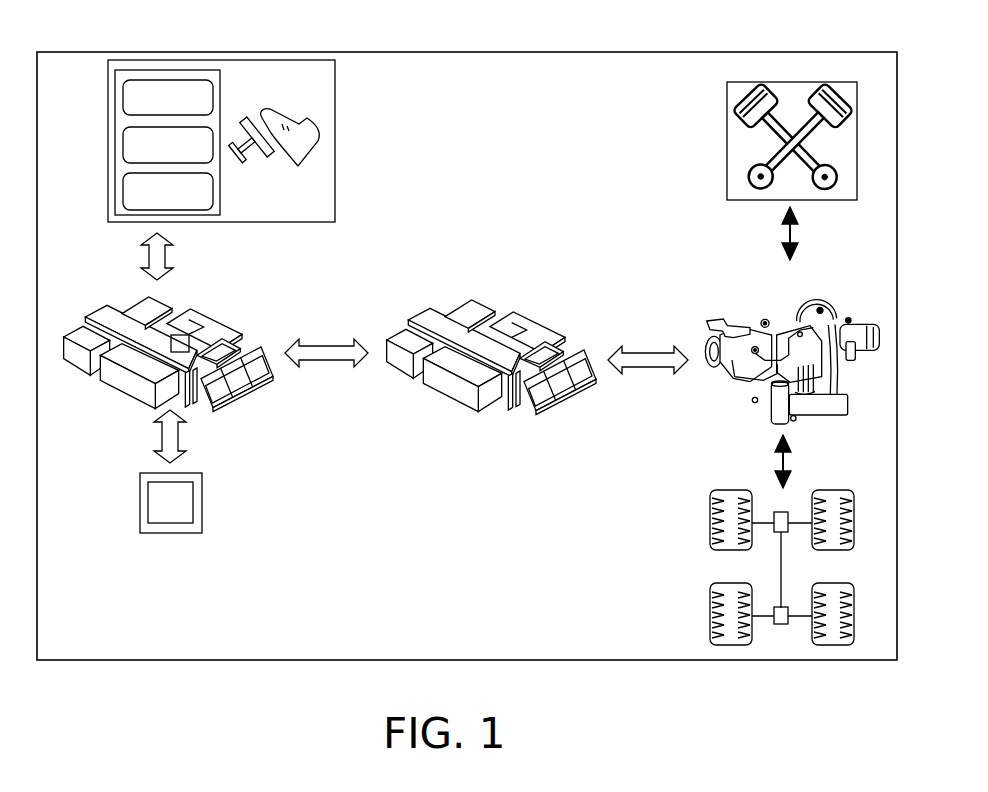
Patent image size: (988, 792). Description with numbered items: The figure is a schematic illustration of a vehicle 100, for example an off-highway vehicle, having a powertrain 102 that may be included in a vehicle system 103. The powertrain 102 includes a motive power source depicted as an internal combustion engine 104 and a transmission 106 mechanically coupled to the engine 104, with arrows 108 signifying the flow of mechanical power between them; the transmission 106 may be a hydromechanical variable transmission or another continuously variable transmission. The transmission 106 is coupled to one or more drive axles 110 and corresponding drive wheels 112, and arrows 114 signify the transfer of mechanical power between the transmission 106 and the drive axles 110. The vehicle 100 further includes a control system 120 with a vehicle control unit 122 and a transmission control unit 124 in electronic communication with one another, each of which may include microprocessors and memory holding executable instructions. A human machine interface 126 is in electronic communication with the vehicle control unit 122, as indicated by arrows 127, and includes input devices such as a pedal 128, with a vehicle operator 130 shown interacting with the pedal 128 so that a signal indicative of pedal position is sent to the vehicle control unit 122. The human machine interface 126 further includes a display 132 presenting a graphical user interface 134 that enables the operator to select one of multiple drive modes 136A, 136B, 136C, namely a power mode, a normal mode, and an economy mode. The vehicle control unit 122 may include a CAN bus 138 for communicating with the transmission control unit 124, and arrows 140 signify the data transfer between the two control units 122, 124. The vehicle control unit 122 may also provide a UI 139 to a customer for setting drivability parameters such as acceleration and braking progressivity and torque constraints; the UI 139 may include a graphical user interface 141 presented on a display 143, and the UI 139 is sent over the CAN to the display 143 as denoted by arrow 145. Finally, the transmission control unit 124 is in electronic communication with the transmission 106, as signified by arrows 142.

The vehicle 100 is at (56, 52).
The powertrain 102 is at (666, 124).
The vehicle system 103 is at (880, 66).
The internal combustion engine 104 is at (735, 82).
The transmission 106 is at (722, 293).
The arrows 108 is at (797, 232).
The drive axles 110 is at (751, 547).
The drive wheels 112 is at (710, 540).
The arrows 114 is at (780, 460).
The control system 120 is at (590, 228).
The vehicle control unit 122 is at (170, 384).
The transmission control unit 124 is at (472, 449).
The human machine interface 126 is at (336, 102).
The arrows 127 is at (168, 258).
The pedal 128 is at (266, 176).
The vehicle operator 130 is at (301, 110).
The display 132 is at (220, 100).
The graphical user interface 134 is at (128, 68).
The drive mode 136A is at (123, 97).
The drive mode 136B is at (123, 144).
The drive mode 136C is at (123, 190).
The CAN bus 138 is at (192, 320).
The UI 139 is at (229, 503).
The arrows 140 is at (327, 346).
The graphical user interface 141 is at (193, 502).
The arrows 142 is at (650, 353).
The display 143 is at (202, 527).
The arrow 145 is at (180, 440).